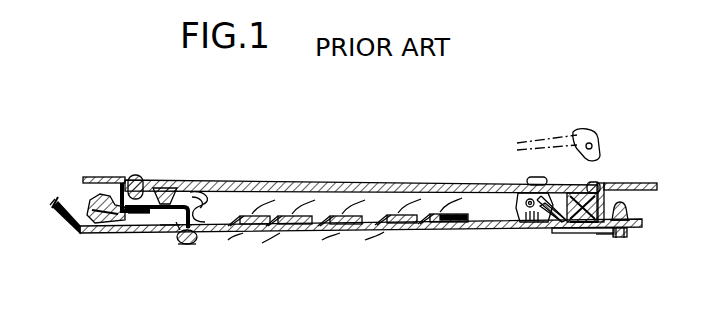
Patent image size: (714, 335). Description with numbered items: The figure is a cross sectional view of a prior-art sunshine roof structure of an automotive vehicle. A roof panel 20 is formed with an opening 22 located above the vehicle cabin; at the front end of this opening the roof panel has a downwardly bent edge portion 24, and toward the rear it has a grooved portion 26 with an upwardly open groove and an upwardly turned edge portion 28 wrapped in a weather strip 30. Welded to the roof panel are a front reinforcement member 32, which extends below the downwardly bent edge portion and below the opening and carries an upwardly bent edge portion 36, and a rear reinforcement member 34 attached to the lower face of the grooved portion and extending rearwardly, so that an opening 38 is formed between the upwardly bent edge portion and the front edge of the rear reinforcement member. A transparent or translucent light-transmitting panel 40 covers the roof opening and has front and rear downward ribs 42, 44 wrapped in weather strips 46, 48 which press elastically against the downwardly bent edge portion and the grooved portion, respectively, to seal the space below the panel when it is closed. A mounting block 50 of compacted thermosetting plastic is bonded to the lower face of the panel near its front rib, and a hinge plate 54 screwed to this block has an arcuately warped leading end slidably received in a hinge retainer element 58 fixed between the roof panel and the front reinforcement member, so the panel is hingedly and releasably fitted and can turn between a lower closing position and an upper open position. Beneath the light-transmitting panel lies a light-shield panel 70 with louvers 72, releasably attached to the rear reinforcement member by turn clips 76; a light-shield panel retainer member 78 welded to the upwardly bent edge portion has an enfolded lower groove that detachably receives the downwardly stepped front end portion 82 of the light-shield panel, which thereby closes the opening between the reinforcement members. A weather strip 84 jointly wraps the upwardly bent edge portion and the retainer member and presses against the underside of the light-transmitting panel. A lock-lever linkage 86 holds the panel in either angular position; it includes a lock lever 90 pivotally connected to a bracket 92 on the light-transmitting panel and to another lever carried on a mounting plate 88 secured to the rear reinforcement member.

The roof panel 20 is at (103, 175).
The opening 22 is at (360, 195).
The downwardly bent edge portion 24 is at (122, 184).
The grooved portion 26 is at (586, 224).
The upwardly turned edge portion 28 is at (560, 235).
The weather strip 30 is at (578, 194).
The front reinforcement member 32 is at (93, 234).
The rear reinforcement member 34 is at (629, 210).
The upwardly bent edge portion 36 is at (170, 231).
The opening 38 is at (460, 228).
The light-transmitting panel 40 is at (297, 181).
The front downward rib 42 is at (150, 205).
The rear downward rib 44 is at (601, 186).
The weather strip 46 is at (136, 176).
The weather strip 48 is at (593, 182).
The mounting block 50 is at (168, 190).
The hinge plate 54 is at (140, 222).
The hinge retainer element 58 is at (90, 200).
The light-shield panel 70 is at (420, 239).
The louvers 72 is at (412, 214).
The turn clip 76 is at (622, 239).
The light-shield panel retainer member 78 is at (180, 246).
The downwardly stepped front end portion 82 is at (200, 242).
The weather strip 84 is at (210, 196).
The lock-lever linkage 86 is at (506, 202).
The mounting plate 88 is at (600, 235).
The lock lever 90 is at (517, 225).
The bracket 92 is at (542, 145).